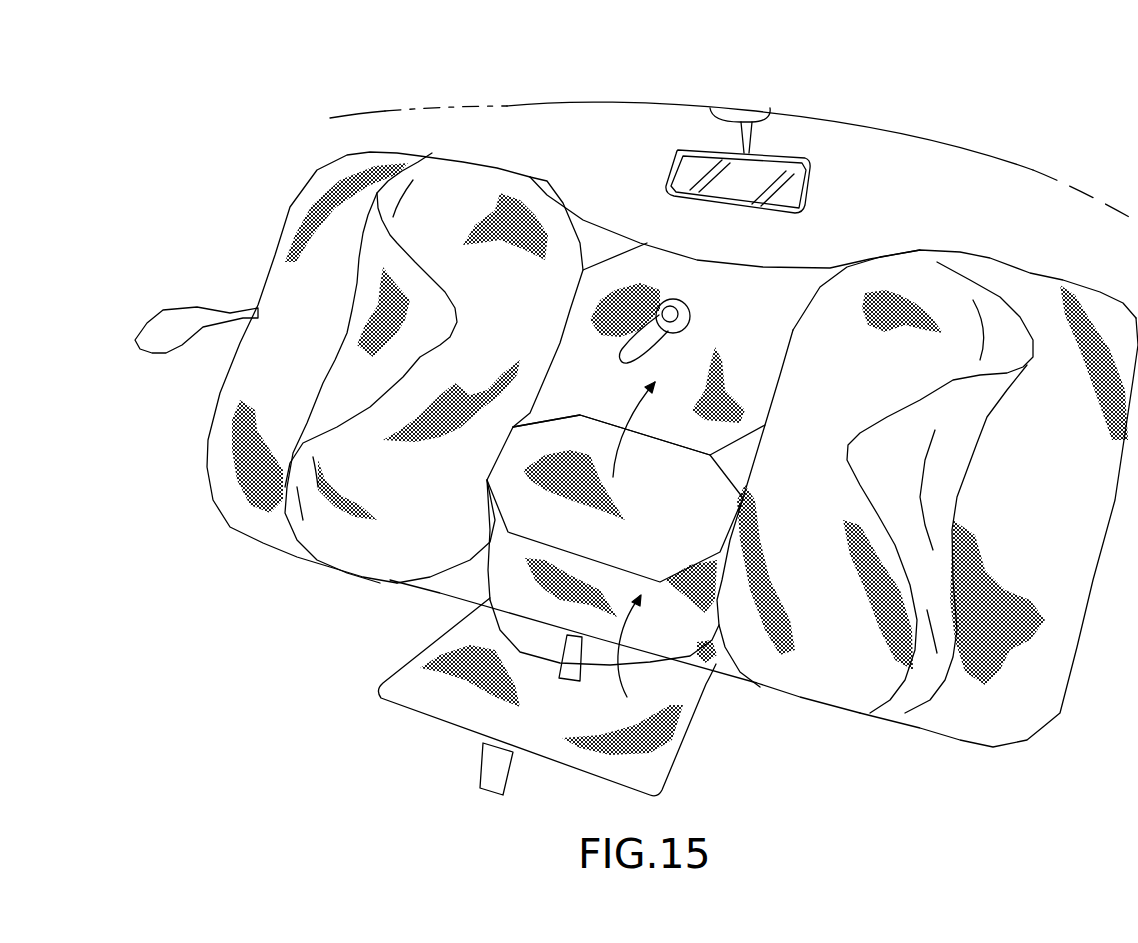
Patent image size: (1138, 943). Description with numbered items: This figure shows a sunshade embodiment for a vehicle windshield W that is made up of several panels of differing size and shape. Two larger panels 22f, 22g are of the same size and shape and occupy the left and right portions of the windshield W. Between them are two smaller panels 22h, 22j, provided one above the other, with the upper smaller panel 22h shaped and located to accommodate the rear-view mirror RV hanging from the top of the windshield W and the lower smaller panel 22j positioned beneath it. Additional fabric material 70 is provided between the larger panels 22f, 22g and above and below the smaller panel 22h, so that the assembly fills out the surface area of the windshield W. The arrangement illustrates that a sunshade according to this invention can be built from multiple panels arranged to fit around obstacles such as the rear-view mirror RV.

The panel 22f is at (292, 208).
The panel 22g is at (1013, 275).
The smaller panel 22h is at (728, 309).
The smaller panel 22j is at (522, 592).
The additional fabric material 70 is at (593, 234).
The windshield W is at (678, 104).
The rear-view mirror RV is at (808, 177).